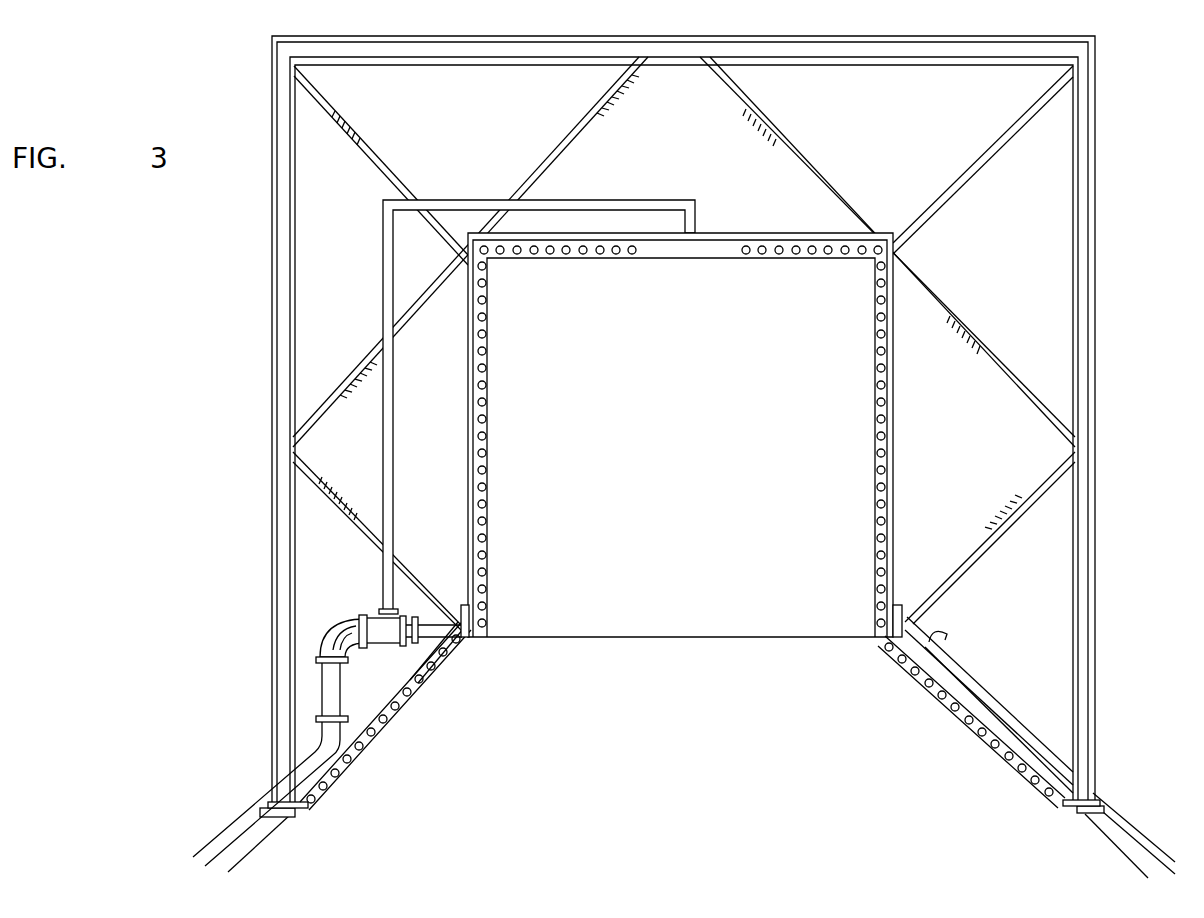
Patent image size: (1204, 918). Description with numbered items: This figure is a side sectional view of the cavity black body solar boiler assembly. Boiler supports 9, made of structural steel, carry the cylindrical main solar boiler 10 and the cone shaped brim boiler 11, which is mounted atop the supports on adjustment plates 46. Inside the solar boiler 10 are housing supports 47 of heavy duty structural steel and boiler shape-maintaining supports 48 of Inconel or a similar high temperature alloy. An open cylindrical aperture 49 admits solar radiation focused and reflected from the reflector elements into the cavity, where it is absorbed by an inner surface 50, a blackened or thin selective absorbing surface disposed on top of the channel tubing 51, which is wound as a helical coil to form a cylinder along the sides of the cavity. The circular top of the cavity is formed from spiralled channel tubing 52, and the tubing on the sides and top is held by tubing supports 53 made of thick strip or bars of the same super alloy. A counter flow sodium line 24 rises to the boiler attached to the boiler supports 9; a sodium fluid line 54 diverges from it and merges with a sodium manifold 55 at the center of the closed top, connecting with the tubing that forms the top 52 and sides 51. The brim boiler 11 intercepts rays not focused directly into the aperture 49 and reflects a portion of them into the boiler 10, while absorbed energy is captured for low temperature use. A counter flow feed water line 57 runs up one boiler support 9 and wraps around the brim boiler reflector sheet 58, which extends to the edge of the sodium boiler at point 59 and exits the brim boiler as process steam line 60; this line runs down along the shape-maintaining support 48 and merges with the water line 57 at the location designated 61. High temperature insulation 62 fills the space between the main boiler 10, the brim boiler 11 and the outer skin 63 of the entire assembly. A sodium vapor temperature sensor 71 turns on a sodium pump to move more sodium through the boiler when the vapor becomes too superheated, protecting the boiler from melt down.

The boiler supports 9 is at (262, 826).
The main solar boiler 10 is at (1097, 106).
The brim boiler 11 is at (395, 705).
The counter flow sodium line 24 is at (327, 638).
The adjustment plates 46 is at (1068, 812).
The housing supports 47 is at (1082, 400).
The boiler shape-maintaining supports 48 is at (838, 198).
The cylindrical aperture 49 is at (470, 627).
The inner surface 50 is at (785, 258).
The channel tubing 51 is at (875, 372).
The spiralled channel tubing 52 is at (577, 258).
The tubing supports 53 is at (603, 233).
The sodium fluid line 54 is at (383, 575).
The sodium manifold 55 is at (712, 233).
The counter flow feed water line 57 is at (1140, 825).
The brim boiler reflector sheet 58 is at (433, 600).
The point at edge of solar sodium boiler 59 is at (893, 640).
The process steam line 60 is at (942, 633).
The merge location 61 is at (1100, 790).
The high temperature insulation 62 is at (355, 311).
The outer skin 63 is at (1100, 345).
The sodium vapor temperature sensor 71 is at (415, 606).